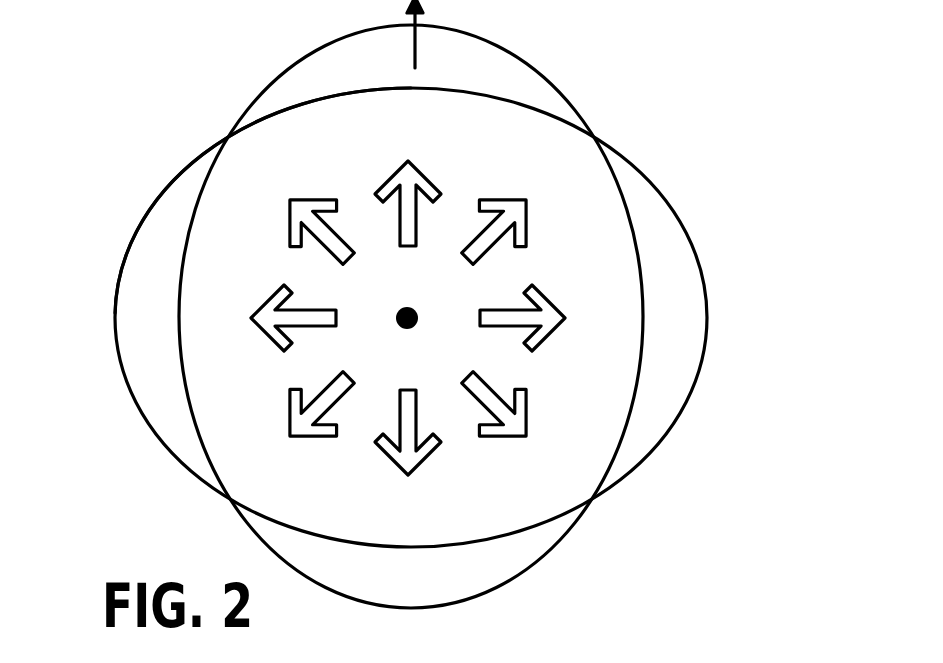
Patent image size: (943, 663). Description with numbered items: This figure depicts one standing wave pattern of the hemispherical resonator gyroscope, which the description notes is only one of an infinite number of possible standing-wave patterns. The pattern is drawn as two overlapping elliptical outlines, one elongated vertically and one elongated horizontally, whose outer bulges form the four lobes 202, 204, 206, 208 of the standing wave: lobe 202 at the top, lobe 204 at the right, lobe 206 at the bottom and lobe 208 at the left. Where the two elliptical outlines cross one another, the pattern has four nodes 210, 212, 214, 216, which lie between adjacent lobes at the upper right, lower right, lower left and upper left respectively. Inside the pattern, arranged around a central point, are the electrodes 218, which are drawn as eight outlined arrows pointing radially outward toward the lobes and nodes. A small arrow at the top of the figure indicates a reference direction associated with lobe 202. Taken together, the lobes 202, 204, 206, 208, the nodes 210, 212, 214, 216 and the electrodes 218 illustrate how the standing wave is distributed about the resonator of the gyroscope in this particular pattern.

The lobe 202 is at (430, 24).
The lobe 204 is at (707, 316).
The lobe 206 is at (410, 608).
The lobe 208 is at (113, 312).
The node 210 is at (594, 137).
The node 212 is at (595, 497).
The node 214 is at (228, 498).
The node 216 is at (226, 136).
The electrodes 218 is at (414, 163).